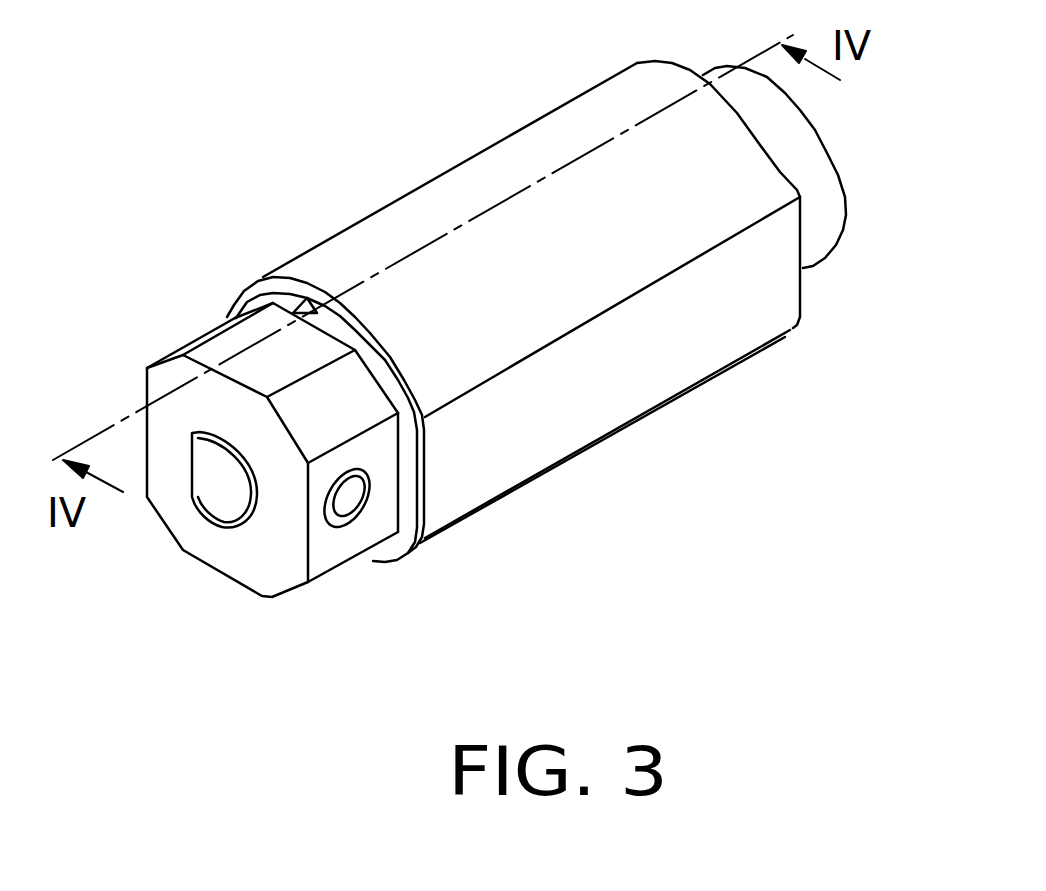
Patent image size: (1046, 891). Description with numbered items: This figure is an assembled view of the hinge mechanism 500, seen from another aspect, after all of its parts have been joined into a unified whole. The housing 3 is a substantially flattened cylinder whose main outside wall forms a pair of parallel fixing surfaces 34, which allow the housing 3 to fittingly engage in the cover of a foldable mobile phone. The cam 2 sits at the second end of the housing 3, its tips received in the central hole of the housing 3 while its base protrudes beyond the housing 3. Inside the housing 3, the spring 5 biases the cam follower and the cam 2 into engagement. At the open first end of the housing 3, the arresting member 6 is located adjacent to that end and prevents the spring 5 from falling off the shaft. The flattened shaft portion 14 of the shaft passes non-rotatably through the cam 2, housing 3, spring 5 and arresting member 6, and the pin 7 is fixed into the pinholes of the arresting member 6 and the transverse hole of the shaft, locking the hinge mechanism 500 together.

The hinge mechanism 500 is at (185, 130).
The housing 3 is at (495, 180).
The cam 2 is at (788, 117).
The fixing surfaces 34 is at (618, 388).
The spring 5 is at (402, 419).
The arresting member 6 is at (155, 367).
The flattened shaft portion 14 is at (220, 478).
The pin 7 is at (348, 497).